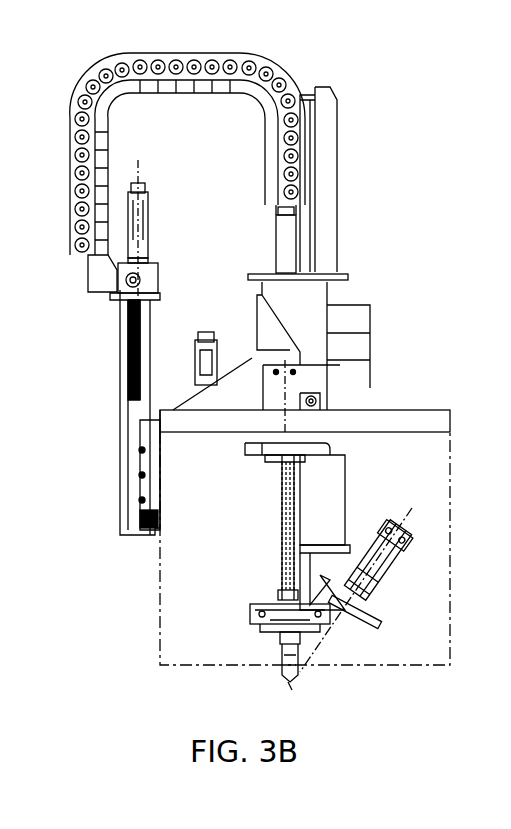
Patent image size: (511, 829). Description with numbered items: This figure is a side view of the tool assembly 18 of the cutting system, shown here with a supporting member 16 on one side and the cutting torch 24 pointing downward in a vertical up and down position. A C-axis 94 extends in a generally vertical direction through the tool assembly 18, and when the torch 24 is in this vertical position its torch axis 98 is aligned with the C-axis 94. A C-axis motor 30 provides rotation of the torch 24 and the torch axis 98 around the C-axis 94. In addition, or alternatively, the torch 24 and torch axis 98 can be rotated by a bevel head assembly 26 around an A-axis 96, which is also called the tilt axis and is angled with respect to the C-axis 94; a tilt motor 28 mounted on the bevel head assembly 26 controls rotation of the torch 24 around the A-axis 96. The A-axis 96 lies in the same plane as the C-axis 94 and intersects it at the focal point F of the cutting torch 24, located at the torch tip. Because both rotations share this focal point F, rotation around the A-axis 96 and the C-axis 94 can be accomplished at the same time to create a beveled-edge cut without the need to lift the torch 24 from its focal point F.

The vertical slide 16 is at (118, 356).
The tool assembly 18 is at (404, 394).
The torch 24 is at (285, 678).
The bevel head assembly 26 is at (346, 503).
The tilt motor 28 is at (388, 582).
The C-axis motor 30 is at (206, 330).
The C-axis 94 is at (305, 392).
The A-axis 96 is at (413, 518).
The torch axis 98 is at (272, 560).
The focal point F is at (292, 690).